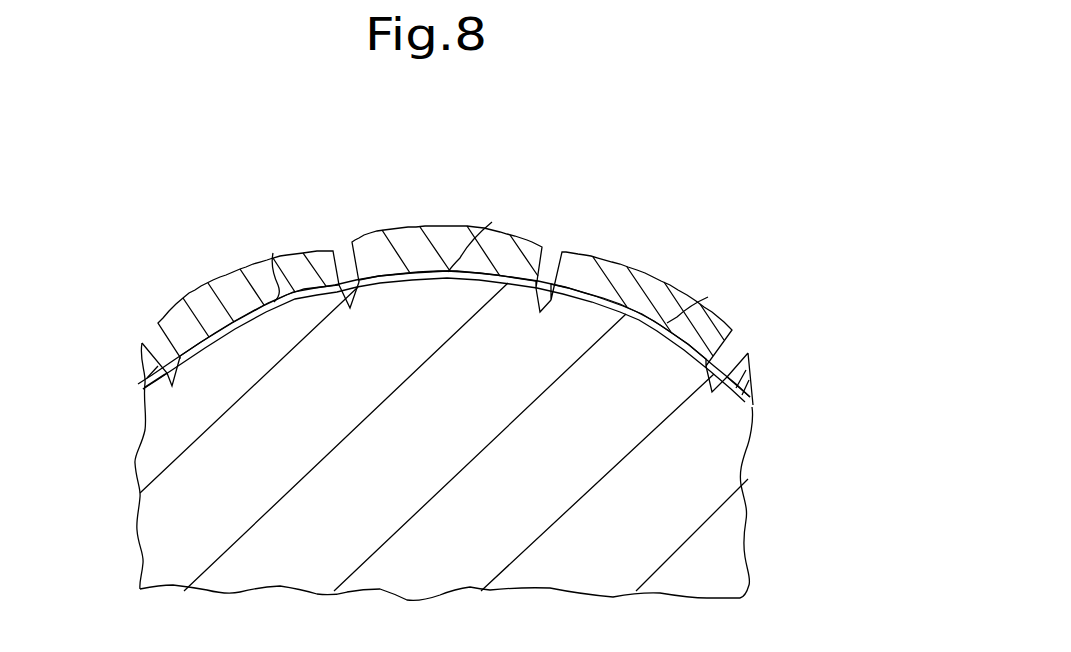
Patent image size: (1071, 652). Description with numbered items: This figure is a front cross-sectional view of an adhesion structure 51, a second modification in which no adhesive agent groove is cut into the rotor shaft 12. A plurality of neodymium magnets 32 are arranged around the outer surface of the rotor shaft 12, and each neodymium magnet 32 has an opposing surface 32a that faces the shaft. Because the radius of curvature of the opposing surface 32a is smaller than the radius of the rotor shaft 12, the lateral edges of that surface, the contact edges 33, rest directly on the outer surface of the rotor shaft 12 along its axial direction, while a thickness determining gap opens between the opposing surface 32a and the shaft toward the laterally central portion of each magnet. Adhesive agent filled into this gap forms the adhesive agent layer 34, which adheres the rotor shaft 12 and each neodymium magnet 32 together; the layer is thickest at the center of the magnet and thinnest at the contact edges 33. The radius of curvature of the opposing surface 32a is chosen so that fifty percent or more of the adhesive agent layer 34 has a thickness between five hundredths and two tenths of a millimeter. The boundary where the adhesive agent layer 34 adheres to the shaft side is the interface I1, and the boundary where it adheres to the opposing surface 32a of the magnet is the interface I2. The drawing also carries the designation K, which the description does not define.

The adhesion structure 51 is at (755, 245).
The rotor shaft 12 is at (730, 543).
The neodymium magnet 32 is at (236, 280).
The opposing surface 32a is at (295, 300).
The contact edges 33 is at (172, 386).
The adhesive agent layer 34 is at (260, 311).
The boundary line K is at (494, 258).
The interface I1 is at (211, 346).
The interface I2 is at (205, 331).